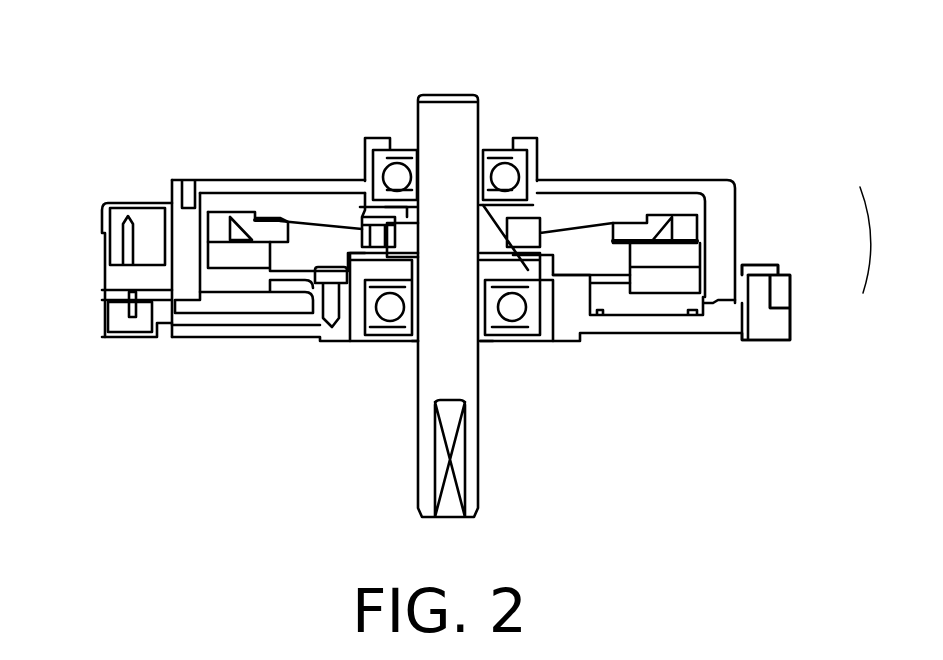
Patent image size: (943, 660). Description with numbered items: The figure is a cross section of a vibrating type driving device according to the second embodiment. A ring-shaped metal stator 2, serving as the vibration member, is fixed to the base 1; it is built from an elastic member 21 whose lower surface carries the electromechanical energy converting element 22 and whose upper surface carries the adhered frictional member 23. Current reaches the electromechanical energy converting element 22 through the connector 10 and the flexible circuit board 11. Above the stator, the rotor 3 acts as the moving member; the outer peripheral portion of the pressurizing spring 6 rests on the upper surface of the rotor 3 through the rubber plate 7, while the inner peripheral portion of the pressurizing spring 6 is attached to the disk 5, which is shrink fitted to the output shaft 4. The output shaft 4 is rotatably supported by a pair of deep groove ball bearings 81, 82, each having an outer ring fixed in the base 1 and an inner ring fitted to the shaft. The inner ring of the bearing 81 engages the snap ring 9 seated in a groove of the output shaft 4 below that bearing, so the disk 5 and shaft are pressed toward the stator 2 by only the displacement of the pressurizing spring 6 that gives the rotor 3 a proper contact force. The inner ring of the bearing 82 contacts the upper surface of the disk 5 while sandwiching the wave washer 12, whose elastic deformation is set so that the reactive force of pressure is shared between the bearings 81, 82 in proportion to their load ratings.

The base 1 is at (785, 323).
The stator 2 is at (875, 240).
The elastic member 21 is at (693, 277).
The electromechanical energy converting element 22 is at (707, 295).
The frictional member 23 is at (697, 237).
The rotor 3 is at (685, 225).
The output shaft 4 is at (447, 115).
The disk 5 is at (383, 217).
The pressurizing spring 6 is at (317, 223).
The rubber plate 7 is at (272, 222).
The deep groove ball bearing 81 is at (390, 317).
The deep groove ball bearing 82 is at (398, 168).
The snap ring 9 is at (500, 332).
The connector 10 is at (115, 275).
The flexible circuit board 11 is at (205, 308).
The wave washer 12 is at (528, 270).